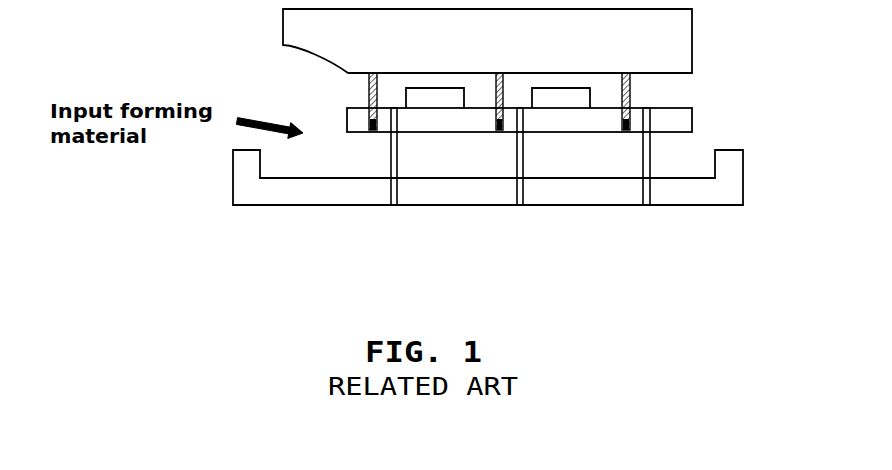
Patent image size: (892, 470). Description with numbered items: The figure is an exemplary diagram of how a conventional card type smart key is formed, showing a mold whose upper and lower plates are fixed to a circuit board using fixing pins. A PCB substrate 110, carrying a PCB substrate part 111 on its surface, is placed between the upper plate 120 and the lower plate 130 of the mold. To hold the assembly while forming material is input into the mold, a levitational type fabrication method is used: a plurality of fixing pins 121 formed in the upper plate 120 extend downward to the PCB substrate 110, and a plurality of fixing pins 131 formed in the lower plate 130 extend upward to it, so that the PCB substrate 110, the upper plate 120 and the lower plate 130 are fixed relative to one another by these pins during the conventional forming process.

The conventional PCB substrate 110 is at (560, 179).
The conventional PCB substrate part 111 is at (437, 97).
The conventional mold upper plate 120 is at (683, 37).
The conventional mold upper plate fixing pin 121 is at (367, 88).
The conventional mold lower plate 130 is at (731, 176).
The conventional mold lower plate fixing pin 131 is at (388, 158).